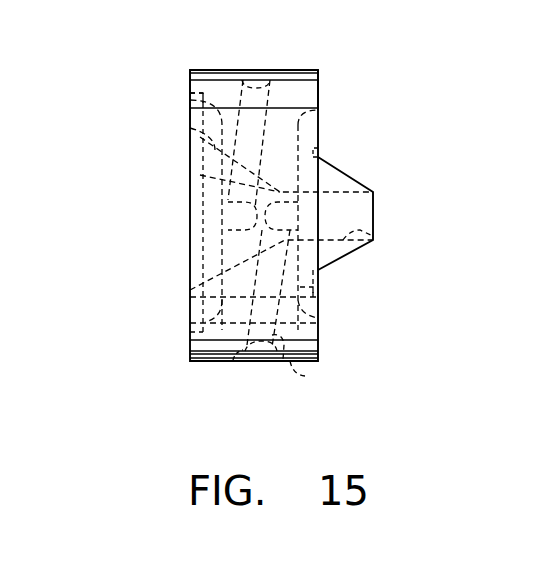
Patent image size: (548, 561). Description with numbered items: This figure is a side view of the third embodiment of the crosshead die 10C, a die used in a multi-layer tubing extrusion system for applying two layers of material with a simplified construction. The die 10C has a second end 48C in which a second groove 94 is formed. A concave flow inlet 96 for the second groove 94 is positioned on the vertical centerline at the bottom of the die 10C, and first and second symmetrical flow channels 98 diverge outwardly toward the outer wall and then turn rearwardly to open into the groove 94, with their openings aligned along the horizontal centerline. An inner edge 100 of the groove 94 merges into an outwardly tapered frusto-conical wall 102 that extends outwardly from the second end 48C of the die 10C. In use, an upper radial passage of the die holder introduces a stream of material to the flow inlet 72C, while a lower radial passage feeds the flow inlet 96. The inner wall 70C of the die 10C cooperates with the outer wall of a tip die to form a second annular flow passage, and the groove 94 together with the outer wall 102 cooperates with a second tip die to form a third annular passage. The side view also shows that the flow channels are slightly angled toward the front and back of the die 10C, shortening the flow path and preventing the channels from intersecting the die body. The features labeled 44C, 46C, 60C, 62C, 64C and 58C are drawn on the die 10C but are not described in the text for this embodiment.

The crosshead die 10C is at (190, 361).
The top plate 44C is at (208, 72).
The side wall 46C is at (188, 83).
The inlet port 60C is at (188, 95).
The bore 62C is at (188, 110).
The passage 64C is at (200, 137).
The inner wall 70C is at (200, 175).
The flow inlet 72C is at (240, 72).
The second end 48C is at (318, 72).
The second groove 94 is at (318, 118).
The inner edge 100 is at (318, 150).
The frusto-conical wall 102 is at (357, 181).
The outlet passage 58C is at (373, 240).
The concave flow inlet 96 is at (247, 352).
The flow channels 98 is at (305, 376).